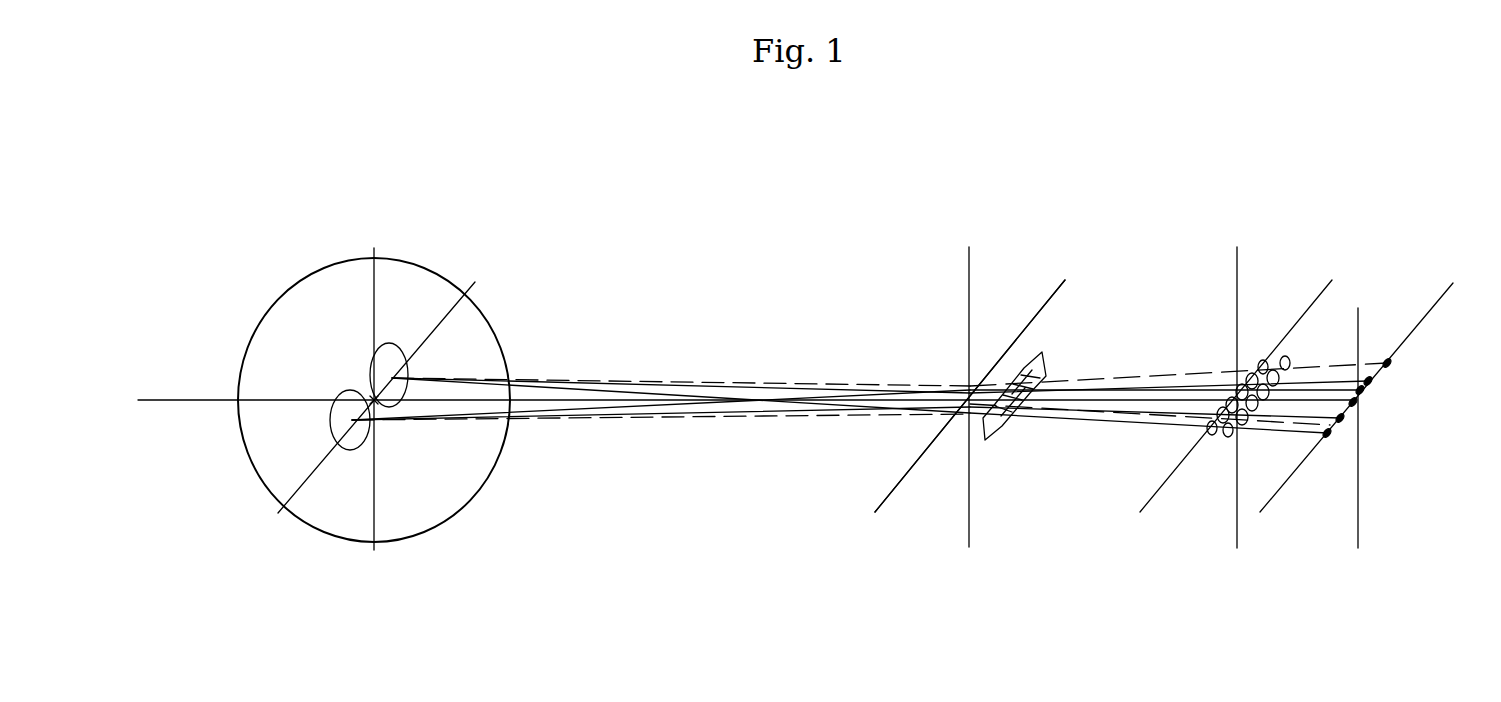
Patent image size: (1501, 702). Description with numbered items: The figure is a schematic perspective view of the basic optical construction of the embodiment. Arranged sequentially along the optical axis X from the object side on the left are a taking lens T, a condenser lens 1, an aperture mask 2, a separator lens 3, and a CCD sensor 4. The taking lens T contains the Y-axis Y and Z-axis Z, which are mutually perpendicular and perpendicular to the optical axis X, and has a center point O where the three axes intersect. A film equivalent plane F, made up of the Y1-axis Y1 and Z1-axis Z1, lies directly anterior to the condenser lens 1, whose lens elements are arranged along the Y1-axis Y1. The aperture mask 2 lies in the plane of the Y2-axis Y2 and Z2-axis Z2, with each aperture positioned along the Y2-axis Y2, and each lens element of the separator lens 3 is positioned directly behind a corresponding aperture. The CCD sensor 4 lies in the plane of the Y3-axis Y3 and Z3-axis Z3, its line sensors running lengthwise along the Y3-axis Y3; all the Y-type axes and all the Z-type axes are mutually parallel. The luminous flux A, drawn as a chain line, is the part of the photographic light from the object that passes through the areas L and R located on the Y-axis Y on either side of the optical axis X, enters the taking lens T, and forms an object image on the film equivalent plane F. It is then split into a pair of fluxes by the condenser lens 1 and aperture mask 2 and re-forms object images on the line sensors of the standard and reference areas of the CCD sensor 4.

The condenser lens 1 is at (1000, 447).
The aperture mask 2 is at (1205, 447).
The separator lens 3 is at (1225, 447).
The CCD sensor 4 is at (1323, 453).
The luminous flux A is at (698, 440).
The film equivalent plane F is at (931, 507).
The taking lens T is at (337, 519).
The right area R is at (388, 343).
The left area L is at (331, 427).
The center point O is at (377, 411).
The optical axis X is at (178, 401).
The Y-axis Y is at (462, 306).
The Z-axis Z is at (385, 266).
The Z1-axis Z1 is at (970, 265).
The Y1-axis Y1 is at (1050, 298).
The Z2-axis Z2 is at (1238, 268).
The Y2-axis Y2 is at (1315, 300).
The Z3-axis Z3 is at (1359, 327).
The Y3-axis Y3 is at (1437, 303).